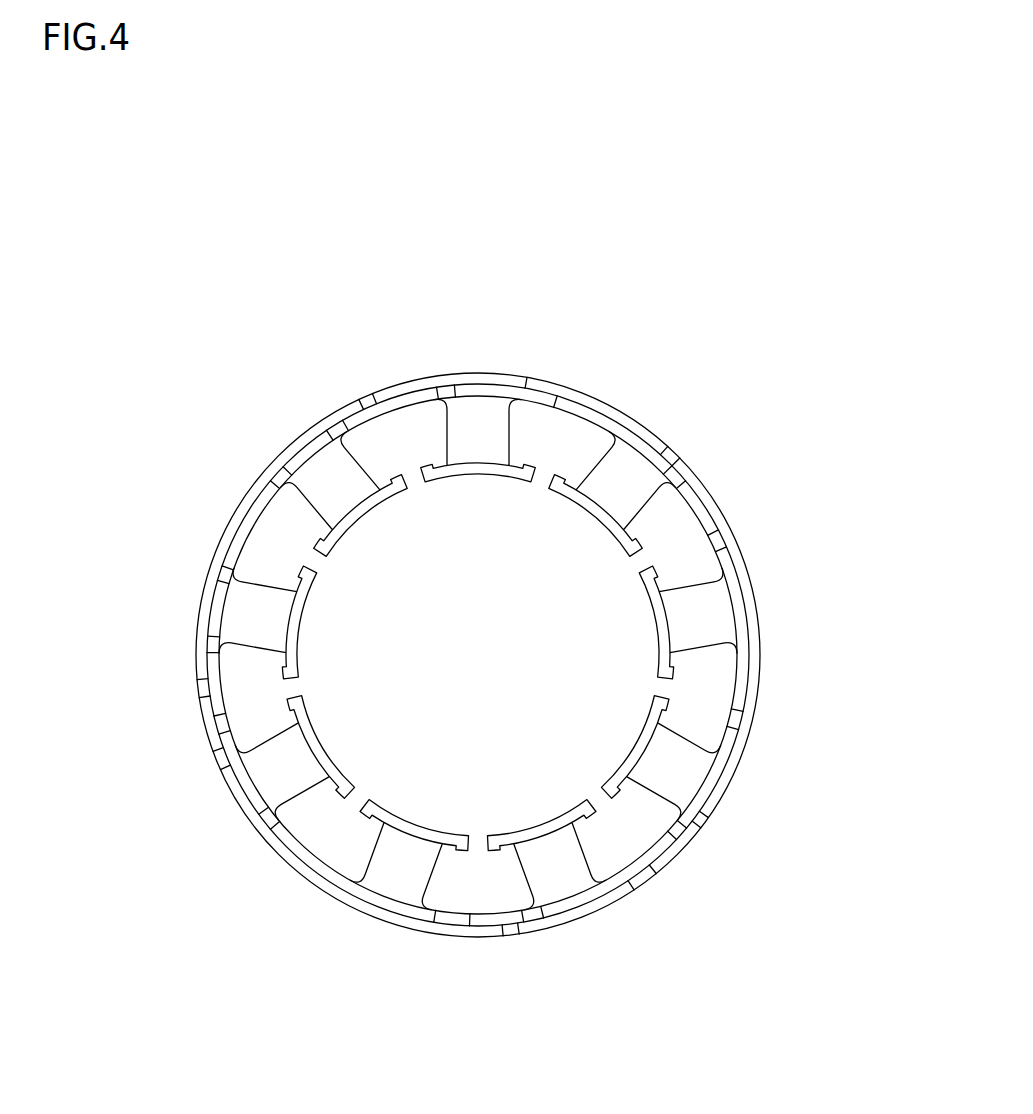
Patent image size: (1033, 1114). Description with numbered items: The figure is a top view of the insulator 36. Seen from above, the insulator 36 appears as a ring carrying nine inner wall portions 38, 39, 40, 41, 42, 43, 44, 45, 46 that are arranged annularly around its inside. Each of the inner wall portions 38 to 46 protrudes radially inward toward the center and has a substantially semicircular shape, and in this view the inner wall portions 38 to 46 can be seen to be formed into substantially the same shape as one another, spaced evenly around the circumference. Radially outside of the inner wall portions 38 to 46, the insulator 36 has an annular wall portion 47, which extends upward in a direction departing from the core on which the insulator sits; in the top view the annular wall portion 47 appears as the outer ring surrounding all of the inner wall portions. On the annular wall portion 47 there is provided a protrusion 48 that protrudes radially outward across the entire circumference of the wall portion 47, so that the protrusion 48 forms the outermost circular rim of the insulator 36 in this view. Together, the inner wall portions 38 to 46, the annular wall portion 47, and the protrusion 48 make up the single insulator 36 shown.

The insulator 36 is at (521, 602).
The inner wall portion 38 is at (478, 443).
The inner wall portion 39 is at (613, 492).
The inner wall portion 40 is at (670, 617).
The inner wall portion 41 is at (660, 760).
The inner wall portion 42 is at (550, 852).
The inner wall portion 43 is at (405, 852).
The inner wall portion 44 is at (297, 760).
The inner wall portion 45 is at (272, 618).
The inner wall portion 46 is at (343, 500).
The annular wall portion 47 is at (697, 490).
The protrusion 48 is at (752, 658).